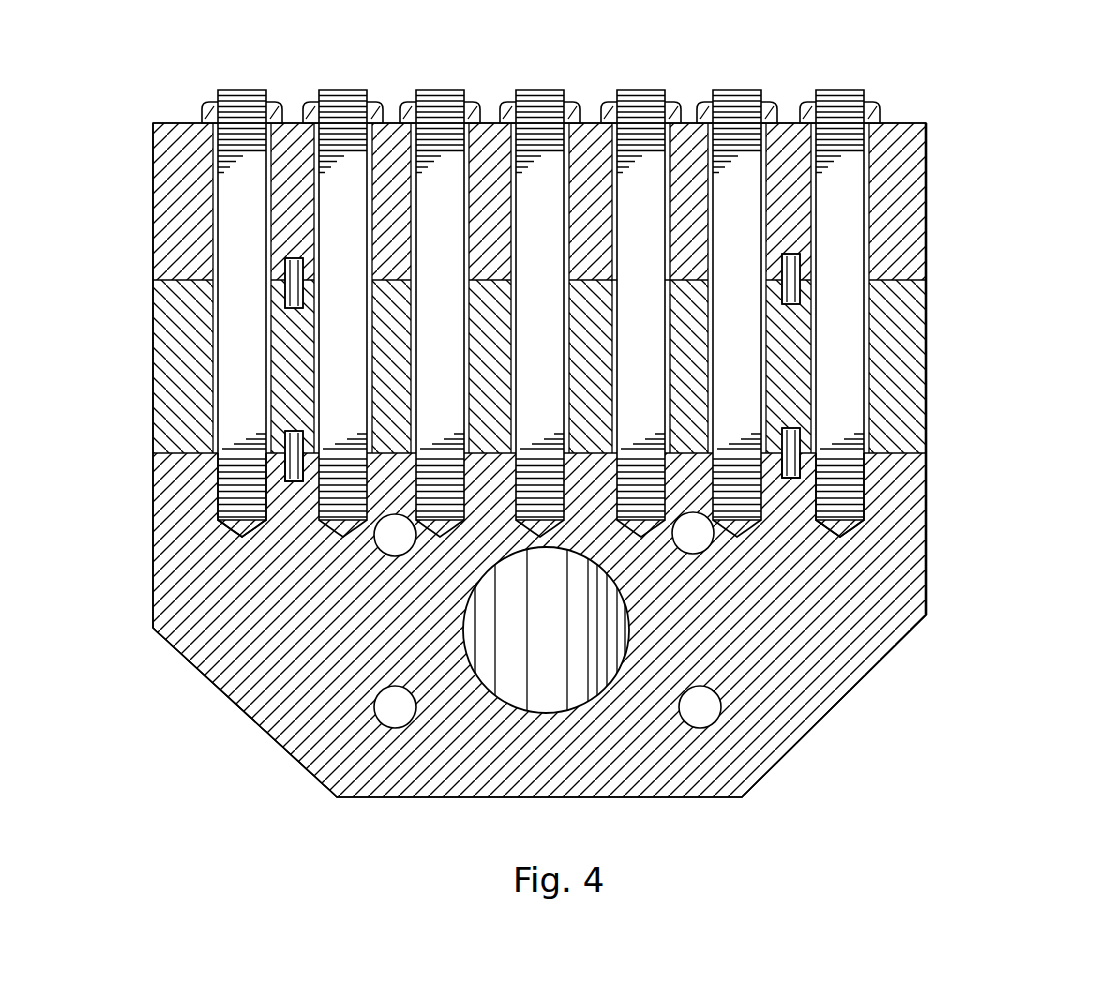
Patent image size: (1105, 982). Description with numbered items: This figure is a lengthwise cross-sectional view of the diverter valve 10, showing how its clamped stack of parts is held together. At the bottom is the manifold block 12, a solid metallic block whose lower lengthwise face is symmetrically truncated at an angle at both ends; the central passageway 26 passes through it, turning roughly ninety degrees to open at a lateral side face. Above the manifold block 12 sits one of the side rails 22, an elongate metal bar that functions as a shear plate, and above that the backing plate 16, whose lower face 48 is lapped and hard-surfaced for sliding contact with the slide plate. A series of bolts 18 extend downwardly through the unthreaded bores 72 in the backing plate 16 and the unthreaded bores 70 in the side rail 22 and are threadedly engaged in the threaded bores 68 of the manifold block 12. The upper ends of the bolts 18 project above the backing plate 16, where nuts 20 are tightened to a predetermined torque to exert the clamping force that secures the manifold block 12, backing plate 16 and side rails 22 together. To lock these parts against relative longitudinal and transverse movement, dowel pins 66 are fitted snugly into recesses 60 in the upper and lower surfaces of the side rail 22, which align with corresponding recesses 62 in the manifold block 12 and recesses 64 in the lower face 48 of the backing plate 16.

The diverter valve 10 is at (980, 617).
The manifold block 12 is at (926, 548).
The backing plate 16 is at (926, 213).
The bolts 18 is at (548, 90).
The nuts 20 is at (580, 118).
The side rails 22 is at (927, 431).
The central passageway 26 is at (567, 678).
The lower face of the backing plate 48 is at (904, 273).
The recesses 60 is at (296, 310).
The recesses 62 is at (292, 481).
The recesses 64 is at (293, 258).
The dowel pins 66 is at (284, 306).
The threaded bores 68 is at (175, 497).
The unthreaded bores 70 is at (866, 355).
The unthreaded bores 72 is at (866, 186).